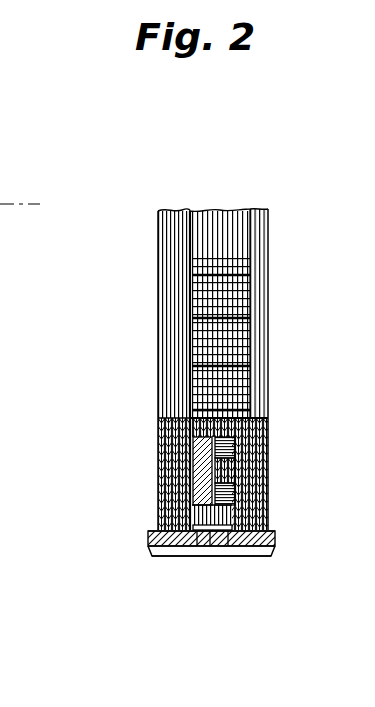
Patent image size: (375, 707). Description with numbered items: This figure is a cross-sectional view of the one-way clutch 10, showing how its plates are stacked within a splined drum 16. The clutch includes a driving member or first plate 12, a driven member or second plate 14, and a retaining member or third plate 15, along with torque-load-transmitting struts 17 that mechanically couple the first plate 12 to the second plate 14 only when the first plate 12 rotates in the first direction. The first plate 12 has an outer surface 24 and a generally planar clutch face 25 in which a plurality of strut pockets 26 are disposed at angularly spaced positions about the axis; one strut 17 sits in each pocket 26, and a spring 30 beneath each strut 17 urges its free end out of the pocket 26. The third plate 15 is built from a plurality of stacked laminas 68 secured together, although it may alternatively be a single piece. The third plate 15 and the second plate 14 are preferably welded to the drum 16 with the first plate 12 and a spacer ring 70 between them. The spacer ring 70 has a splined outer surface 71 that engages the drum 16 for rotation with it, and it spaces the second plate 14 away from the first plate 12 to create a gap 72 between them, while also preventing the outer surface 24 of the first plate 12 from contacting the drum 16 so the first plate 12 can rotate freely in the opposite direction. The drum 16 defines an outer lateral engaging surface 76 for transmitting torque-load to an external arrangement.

The one-way clutch 10 is at (125, 170).
The first plate 12 is at (250, 206).
The second plate 14 is at (190, 206).
The third plate 15 is at (268, 206).
The splined drum 16 is at (152, 558).
The struts 17 is at (163, 433).
The outer surface 24 is at (228, 535).
The clutch face 25 is at (193, 411).
The strut pockets 26 is at (198, 498).
The spring 30 is at (268, 460).
The stacked laminas 68 is at (268, 433).
The spacer ring 70 is at (200, 534).
The splined outer surface 71 is at (208, 532).
The gap 72 is at (192, 528).
The lateral engaging surface 76 is at (222, 557).